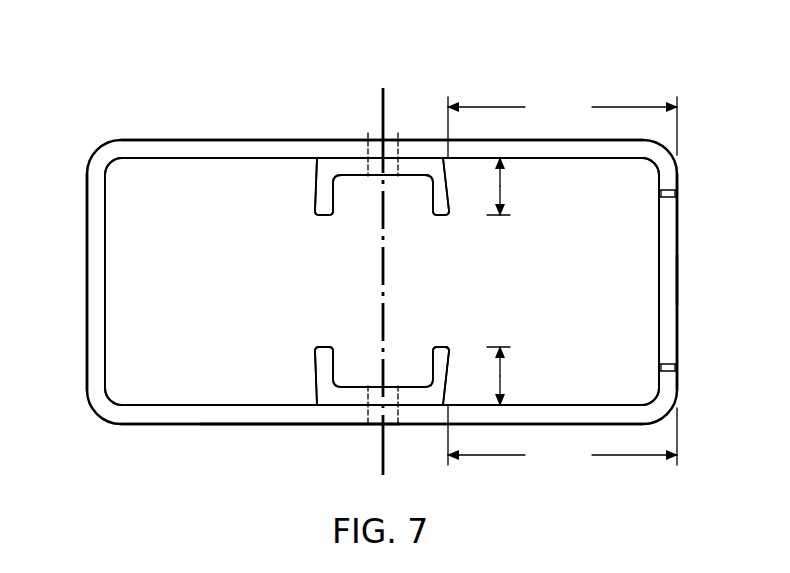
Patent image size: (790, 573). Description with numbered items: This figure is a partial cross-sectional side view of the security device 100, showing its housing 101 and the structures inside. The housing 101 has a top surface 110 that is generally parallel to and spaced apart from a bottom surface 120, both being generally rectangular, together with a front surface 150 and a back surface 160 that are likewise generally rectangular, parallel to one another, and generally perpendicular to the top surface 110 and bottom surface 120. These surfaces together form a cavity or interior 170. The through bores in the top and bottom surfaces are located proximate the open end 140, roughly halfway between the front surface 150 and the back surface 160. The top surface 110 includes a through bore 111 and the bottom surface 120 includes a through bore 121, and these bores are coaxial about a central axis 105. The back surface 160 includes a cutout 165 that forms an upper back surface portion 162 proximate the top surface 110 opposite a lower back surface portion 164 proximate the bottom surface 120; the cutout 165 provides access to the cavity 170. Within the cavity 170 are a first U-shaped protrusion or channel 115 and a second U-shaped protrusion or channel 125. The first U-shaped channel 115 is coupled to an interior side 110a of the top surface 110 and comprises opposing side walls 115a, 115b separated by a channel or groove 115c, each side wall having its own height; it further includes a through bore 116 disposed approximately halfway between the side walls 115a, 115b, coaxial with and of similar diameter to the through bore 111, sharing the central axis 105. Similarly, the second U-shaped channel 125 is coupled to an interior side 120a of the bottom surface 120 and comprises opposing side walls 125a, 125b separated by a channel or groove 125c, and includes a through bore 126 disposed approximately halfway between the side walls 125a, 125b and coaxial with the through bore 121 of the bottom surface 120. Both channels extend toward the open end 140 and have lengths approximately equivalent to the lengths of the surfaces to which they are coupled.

The security device 100 is at (250, 86).
The housing 101 is at (130, 124).
The central axis 105 is at (382, 112).
The top surface 110 is at (180, 140).
The interior side of the top surface 110a is at (152, 160).
The through bore 111 is at (389, 132).
The first U-shaped protrusion or channel 115 is at (318, 183).
The side wall 115a is at (316, 206).
The side wall 115b is at (453, 195).
The channel or groove 115c is at (357, 217).
The through bore 116 is at (393, 178).
The bottom surface 120 is at (178, 424).
The interior side of the bottom surface 120a is at (150, 405).
The through bore 121 is at (388, 430).
The second U-shaped protrusion or channel 125 is at (318, 380).
The side wall 125a is at (316, 357).
The side wall 125b is at (453, 368).
The channel or groove 125c is at (357, 345).
The through bore 126 is at (392, 385).
The open end 140 is at (297, 424).
The front surface 150 is at (87, 278).
The back surface 160 is at (678, 350).
The upper back surface portion 162 is at (678, 186).
The lower back surface portion 164 is at (678, 378).
The cutout 165 is at (686, 278).
The cavity or interior 170 is at (556, 295).